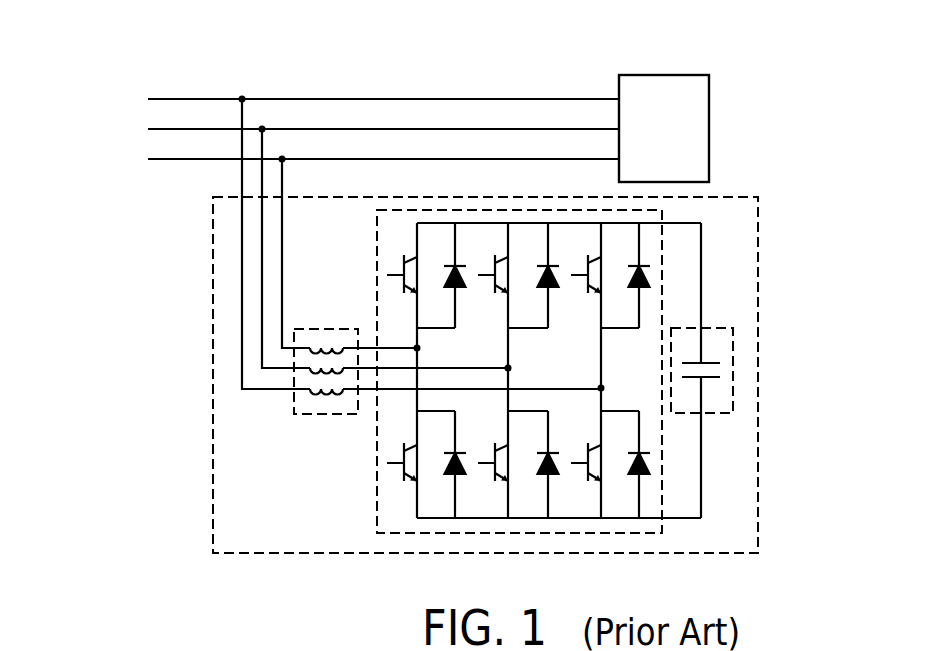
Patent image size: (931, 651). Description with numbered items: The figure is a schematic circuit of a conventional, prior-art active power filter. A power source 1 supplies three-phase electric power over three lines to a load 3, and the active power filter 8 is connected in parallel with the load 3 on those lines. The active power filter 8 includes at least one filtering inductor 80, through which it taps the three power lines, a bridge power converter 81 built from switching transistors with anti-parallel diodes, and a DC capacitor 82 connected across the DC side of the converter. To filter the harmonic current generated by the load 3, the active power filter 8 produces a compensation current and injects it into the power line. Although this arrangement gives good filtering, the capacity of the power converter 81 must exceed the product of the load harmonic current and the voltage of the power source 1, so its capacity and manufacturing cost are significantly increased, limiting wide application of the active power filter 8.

The power source 1 is at (119, 93).
The load 3 is at (697, 137).
The active power filter 8 is at (520, 352).
The filtering inductor 80 is at (322, 414).
The bridge power converter 81 is at (377, 500).
The DC capacitor 82 is at (727, 348).